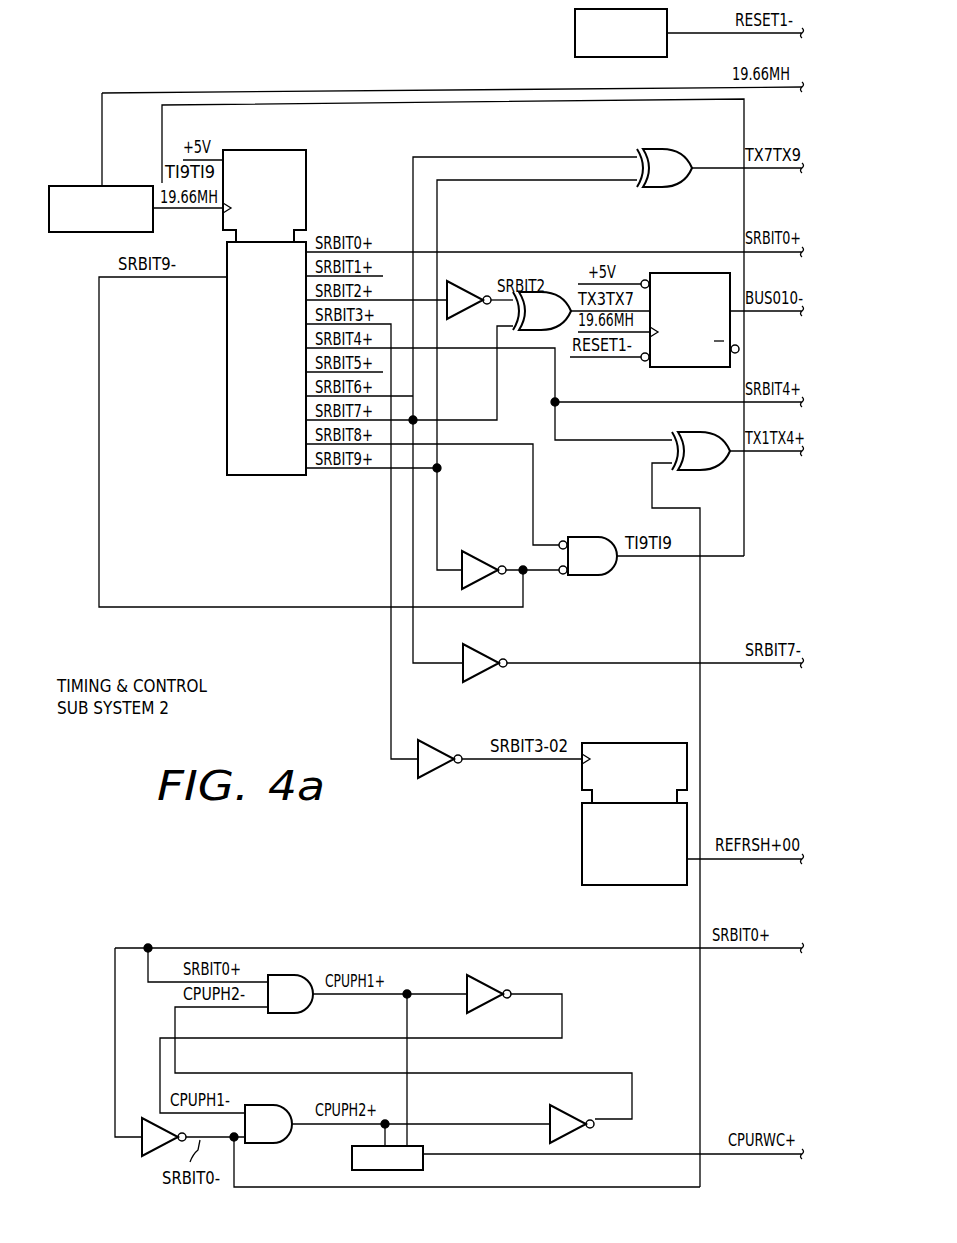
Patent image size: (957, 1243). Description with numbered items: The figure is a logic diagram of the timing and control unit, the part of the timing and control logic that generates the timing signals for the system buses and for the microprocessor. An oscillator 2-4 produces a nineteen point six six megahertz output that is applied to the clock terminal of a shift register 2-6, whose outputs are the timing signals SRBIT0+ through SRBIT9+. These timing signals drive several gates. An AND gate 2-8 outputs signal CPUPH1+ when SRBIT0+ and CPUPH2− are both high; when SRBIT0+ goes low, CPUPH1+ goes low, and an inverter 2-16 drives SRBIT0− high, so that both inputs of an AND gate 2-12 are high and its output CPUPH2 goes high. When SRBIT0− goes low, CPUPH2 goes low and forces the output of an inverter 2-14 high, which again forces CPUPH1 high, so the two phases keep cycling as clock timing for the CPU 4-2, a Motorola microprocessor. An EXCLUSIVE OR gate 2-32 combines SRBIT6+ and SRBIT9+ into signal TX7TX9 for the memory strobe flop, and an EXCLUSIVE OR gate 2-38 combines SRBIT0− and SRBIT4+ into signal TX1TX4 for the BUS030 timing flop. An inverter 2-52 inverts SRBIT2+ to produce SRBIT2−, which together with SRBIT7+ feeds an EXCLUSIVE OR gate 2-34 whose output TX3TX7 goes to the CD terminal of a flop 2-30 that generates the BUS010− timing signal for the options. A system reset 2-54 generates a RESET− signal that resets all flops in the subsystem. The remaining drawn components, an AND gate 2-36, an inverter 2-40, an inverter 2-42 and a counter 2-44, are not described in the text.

The oscillator 2-4 is at (83, 185).
The shift register 2-6 is at (306, 165).
The AND gate 2-8 is at (285, 975).
The AND gate 2-12 is at (265, 1144).
The inverter 2-14 is at (573, 1130).
The inverter 2-16 is at (491, 985).
The flop 2-30 is at (704, 273).
The EXCLUSIVE OR gate 2-32 is at (660, 148).
The EXCLUSIVE OR gate 2-34 is at (555, 292).
The AND gate 2-36 is at (579, 537).
The EXCLUSIVE OR gate 2-38 is at (700, 428).
The inverter 2-40 is at (487, 655).
The inverter 2-42 is at (436, 742).
The counter 2-44 is at (650, 743).
The inverter 2-52 is at (462, 280).
The system reset 2-54 is at (575, 46).
The microprocessor (CPU) 4-2 is at (426, 1147).